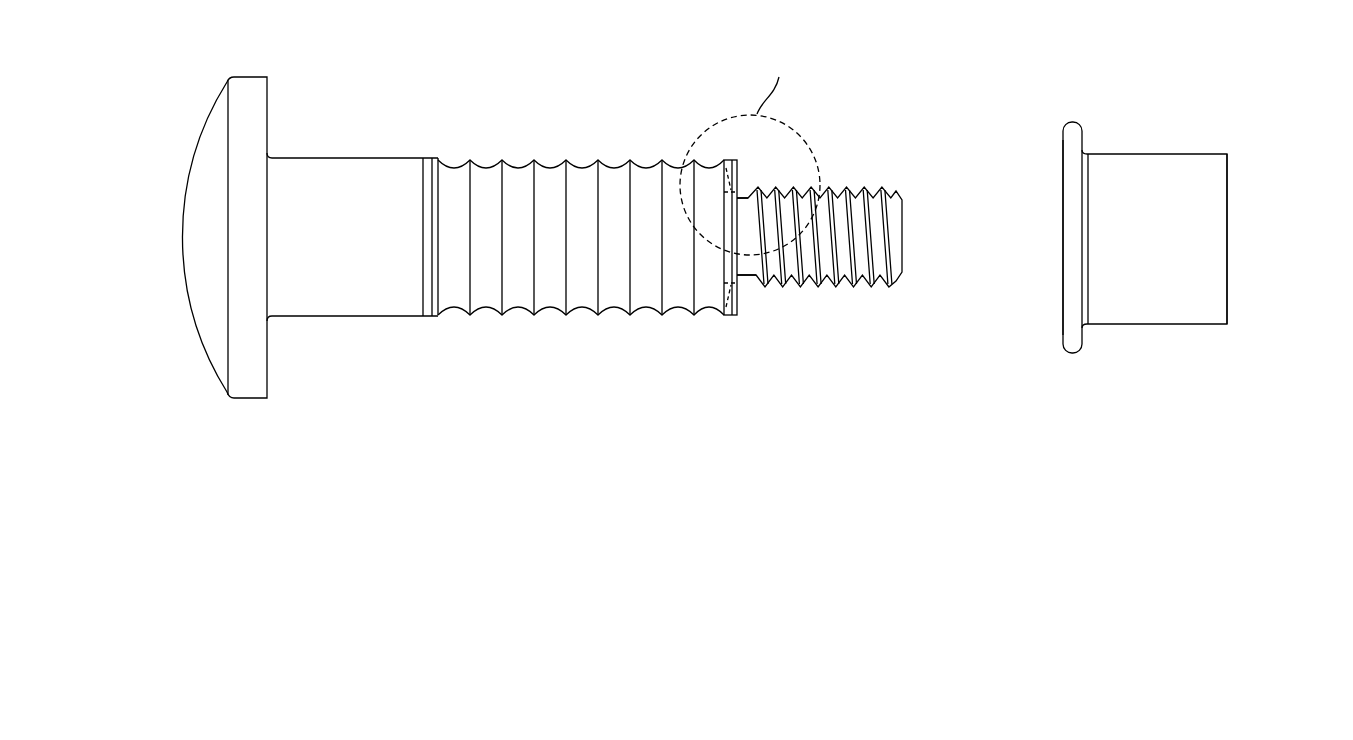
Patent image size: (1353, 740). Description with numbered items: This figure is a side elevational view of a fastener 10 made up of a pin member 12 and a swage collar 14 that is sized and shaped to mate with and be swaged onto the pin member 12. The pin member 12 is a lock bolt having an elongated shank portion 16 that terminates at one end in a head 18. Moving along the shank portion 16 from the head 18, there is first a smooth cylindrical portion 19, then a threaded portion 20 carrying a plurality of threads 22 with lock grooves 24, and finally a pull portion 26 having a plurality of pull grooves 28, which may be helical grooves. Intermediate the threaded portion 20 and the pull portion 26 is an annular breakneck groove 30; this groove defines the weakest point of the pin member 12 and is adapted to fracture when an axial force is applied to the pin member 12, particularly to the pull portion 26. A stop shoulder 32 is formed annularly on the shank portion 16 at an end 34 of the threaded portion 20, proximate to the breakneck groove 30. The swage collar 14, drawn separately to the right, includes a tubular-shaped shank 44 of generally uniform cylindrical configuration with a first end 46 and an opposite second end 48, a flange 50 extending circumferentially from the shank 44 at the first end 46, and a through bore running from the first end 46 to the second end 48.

The fastener 10 is at (326, 497).
The pin member 12 is at (476, 138).
The swage collar 14 is at (1229, 139).
The shank portion 16 is at (425, 316).
The head 18 is at (205, 143).
The smooth cylindrical portion 19 is at (346, 293).
The threaded portion 20 is at (612, 165).
The threads 22 is at (568, 306).
The lock grooves 24 is at (645, 297).
The pull portion 26 is at (817, 282).
The pull grooves 28 is at (843, 190).
The breakneck groove 30 is at (745, 245).
The stop shoulder 32 is at (732, 175).
The end of the threaded portion 34 is at (727, 318).
The shank 44 is at (1145, 303).
The first end 46 is at (1063, 310).
The second end 48 is at (1230, 300).
The flange 50 is at (1072, 122).